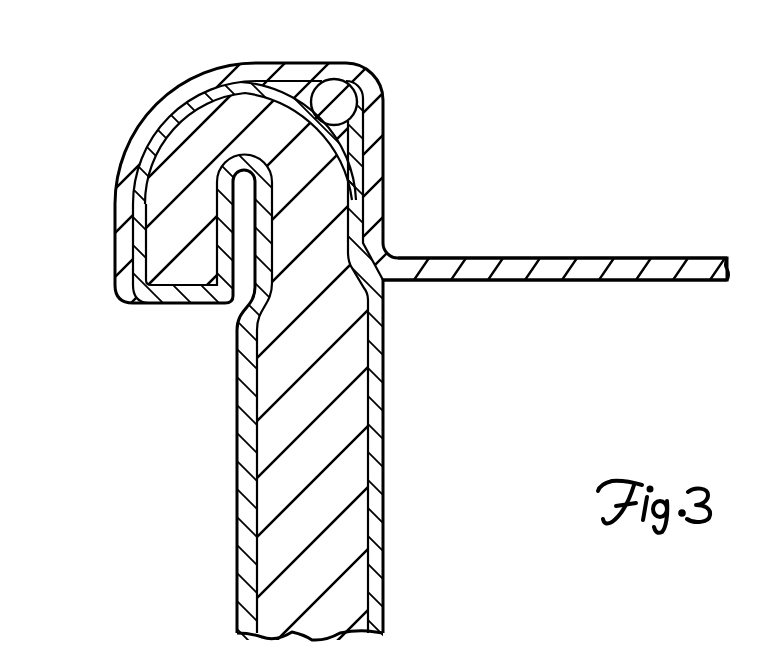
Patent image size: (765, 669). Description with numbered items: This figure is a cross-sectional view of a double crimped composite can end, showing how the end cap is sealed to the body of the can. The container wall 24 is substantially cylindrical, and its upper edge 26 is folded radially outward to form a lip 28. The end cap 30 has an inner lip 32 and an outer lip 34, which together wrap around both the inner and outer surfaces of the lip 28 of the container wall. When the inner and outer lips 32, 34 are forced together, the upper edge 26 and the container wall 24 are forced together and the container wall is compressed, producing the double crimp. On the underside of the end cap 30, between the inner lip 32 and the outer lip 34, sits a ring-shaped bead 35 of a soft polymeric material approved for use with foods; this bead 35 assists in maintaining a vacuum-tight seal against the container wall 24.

The container wall 24 is at (400, 480).
The upper edge 26 is at (150, 289).
The lip 28 is at (187, 124).
The end cap 30 is at (462, 236).
The inner lip 32 is at (383, 120).
The outer lip 34 is at (115, 193).
The ring-shaped bead 35 is at (332, 90).